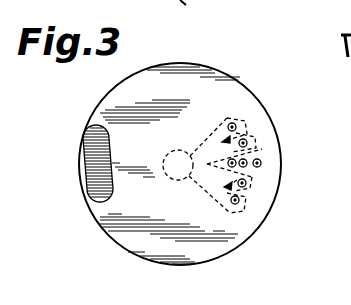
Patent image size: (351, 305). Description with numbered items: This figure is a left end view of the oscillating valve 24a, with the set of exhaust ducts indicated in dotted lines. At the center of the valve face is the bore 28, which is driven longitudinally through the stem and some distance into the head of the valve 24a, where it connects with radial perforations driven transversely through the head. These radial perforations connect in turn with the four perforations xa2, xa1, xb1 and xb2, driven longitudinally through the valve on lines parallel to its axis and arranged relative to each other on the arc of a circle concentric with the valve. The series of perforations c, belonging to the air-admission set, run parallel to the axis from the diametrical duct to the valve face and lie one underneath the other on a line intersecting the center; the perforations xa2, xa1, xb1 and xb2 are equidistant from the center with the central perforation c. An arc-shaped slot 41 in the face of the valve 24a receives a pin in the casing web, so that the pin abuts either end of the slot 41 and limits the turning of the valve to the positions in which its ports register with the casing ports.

The valve 24a is at (207, 262).
The arc-shaped slot 41 is at (84, 172).
The bore 28 is at (173, 152).
The perforation xa2 is at (236, 123).
The perforation xa1 is at (247, 140).
The perforations c is at (235, 162).
The perforation xb1 is at (247, 183).
The perforation xb2 is at (280, 217).